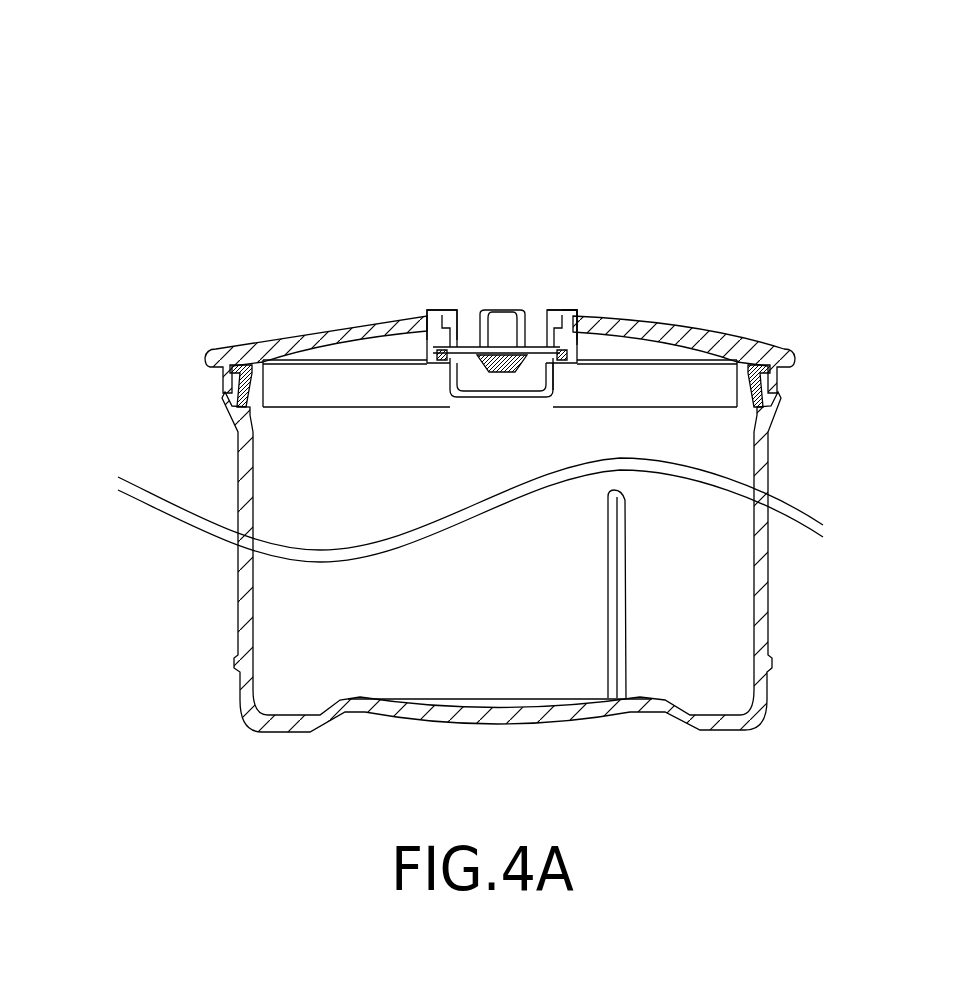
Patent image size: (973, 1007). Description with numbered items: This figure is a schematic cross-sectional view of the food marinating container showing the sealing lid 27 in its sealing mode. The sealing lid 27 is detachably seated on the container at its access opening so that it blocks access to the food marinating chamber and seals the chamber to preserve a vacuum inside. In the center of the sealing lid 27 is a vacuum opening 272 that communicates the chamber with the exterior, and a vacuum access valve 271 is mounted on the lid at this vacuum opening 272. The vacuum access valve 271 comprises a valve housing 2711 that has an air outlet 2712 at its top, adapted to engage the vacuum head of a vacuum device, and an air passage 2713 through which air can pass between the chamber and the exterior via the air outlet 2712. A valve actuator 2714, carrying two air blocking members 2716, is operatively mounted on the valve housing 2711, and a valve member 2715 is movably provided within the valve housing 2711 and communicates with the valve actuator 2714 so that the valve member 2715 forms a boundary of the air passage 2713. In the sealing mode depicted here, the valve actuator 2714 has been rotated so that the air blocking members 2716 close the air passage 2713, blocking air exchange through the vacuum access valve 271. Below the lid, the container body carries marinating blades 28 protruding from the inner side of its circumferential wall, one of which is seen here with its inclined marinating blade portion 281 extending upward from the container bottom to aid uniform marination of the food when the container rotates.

The sealing lid 27 is at (680, 335).
The vacuum access valve 271 is at (581, 256).
The vacuum opening 272 is at (492, 238).
The valve housing 2711 is at (460, 388).
The air outlet 2712 is at (509, 277).
The air passage 2713 is at (573, 377).
The valve actuator 2714 is at (450, 311).
The valve member 2715 is at (490, 378).
The air blocking members 2716 is at (427, 345).
The marinating blades 28 is at (613, 613).
The inclined marinating blade portion 281 is at (656, 561).